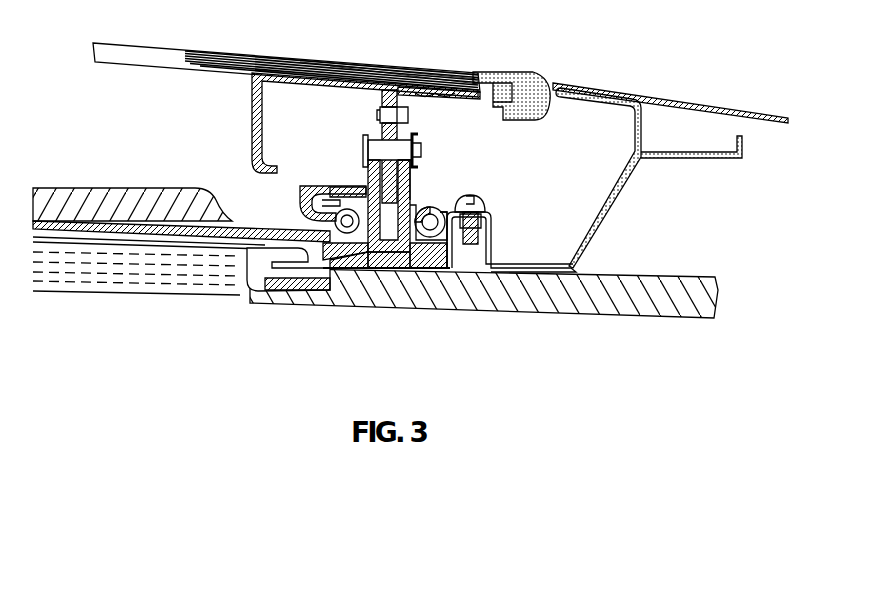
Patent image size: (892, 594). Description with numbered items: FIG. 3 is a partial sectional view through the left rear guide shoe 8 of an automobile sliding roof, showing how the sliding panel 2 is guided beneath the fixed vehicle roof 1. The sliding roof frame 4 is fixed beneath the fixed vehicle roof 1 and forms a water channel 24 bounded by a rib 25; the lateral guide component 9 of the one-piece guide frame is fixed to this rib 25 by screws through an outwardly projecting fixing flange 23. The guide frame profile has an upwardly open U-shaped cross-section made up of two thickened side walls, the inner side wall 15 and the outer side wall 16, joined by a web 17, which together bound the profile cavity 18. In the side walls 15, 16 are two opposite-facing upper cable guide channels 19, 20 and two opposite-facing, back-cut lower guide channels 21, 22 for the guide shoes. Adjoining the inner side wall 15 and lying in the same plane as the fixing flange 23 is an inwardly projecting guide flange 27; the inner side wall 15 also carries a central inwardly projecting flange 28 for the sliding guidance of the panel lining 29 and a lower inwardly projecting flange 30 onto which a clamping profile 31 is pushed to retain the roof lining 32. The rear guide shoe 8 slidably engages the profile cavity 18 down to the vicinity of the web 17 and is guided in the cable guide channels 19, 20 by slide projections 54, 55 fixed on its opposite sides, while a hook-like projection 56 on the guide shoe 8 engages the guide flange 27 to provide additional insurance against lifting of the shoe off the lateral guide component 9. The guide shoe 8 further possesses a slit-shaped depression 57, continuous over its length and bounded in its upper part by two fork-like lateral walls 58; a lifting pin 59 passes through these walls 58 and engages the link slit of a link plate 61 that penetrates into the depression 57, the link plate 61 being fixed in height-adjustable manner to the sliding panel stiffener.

The fixed vehicle roof 1 is at (686, 97).
The sliding panel 2 is at (158, 52).
The sliding roof frame 4 is at (630, 195).
The rear guide shoe 8 is at (337, 160).
The lateral guide component 9 is at (431, 203).
The inner side wall 15 is at (355, 258).
The outer side wall 16 is at (428, 256).
The web 17 is at (375, 252).
The profile cavity 18 is at (412, 188).
The upper cable guide channel 19 is at (337, 212).
The upper cable guide channel 20 is at (442, 207).
The lower guide channel 21 is at (330, 262).
The lower guide channel 22 is at (448, 258).
The fixing flange 23 is at (494, 205).
The water channel 24 is at (511, 242).
The rib 25 is at (492, 222).
The guide flange 27 is at (302, 192).
The central inwardly projecting flange 28 is at (310, 218).
The panel lining 29 is at (164, 188).
The lower inwardly projecting flange 30 is at (278, 268).
The clamping profile 31 is at (253, 275).
The roof lining 32 is at (597, 300).
The slide projection 54 is at (362, 190).
The slide projection 55 is at (470, 196).
The hook-like projection 56 is at (300, 195).
The slit-shaped depression 57 is at (400, 262).
The lateral walls 58 is at (366, 150).
The lifting pin 59 is at (420, 151).
The link plate 61 is at (392, 92).